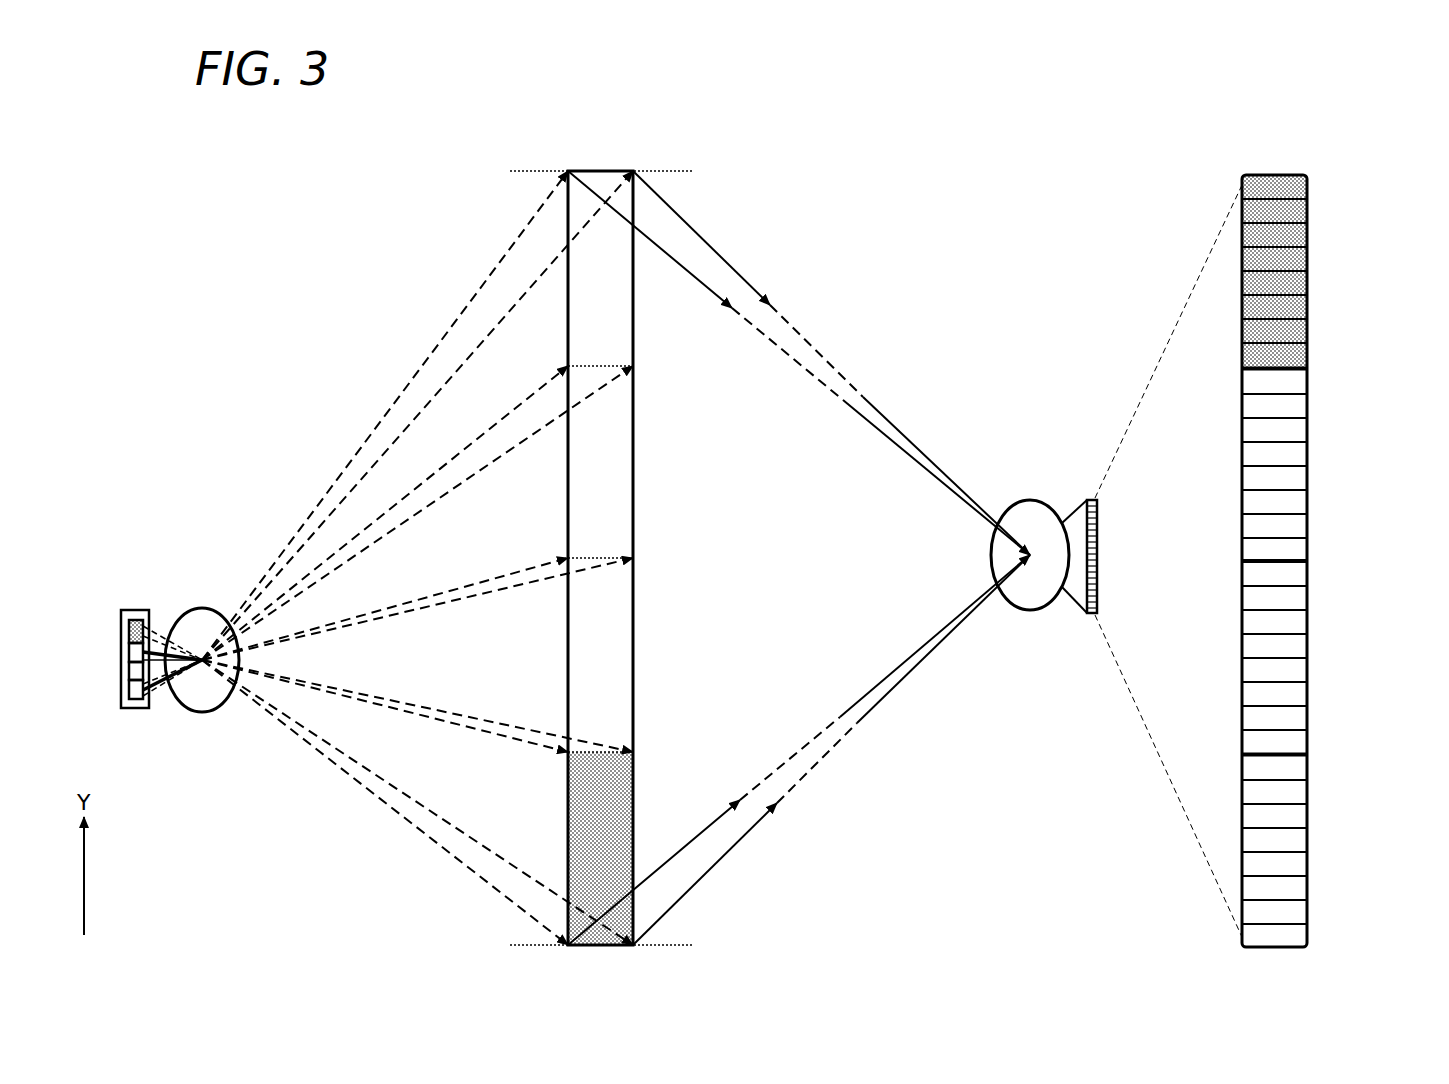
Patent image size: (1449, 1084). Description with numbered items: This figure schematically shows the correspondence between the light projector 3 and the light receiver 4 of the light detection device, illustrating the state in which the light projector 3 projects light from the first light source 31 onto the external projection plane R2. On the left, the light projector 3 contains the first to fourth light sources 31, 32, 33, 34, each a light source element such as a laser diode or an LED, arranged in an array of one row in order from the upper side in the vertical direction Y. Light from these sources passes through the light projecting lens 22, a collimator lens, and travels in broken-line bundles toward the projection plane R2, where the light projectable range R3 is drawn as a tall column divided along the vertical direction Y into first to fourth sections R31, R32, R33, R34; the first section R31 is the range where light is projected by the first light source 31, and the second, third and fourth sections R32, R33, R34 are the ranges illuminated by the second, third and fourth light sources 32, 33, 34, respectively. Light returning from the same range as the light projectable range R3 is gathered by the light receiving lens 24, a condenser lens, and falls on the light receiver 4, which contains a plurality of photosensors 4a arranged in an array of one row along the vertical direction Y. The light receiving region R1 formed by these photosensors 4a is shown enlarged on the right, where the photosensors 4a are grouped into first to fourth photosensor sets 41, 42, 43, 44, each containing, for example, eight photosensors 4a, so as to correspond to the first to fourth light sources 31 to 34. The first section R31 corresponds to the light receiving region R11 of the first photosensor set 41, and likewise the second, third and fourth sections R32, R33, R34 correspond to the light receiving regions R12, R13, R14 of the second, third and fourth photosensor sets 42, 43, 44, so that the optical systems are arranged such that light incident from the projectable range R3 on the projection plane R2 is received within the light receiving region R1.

The light projector 3 is at (120, 593).
The light projecting lens 22 is at (200, 607).
The light receiving lens 24 is at (1010, 505).
The light receiver 4 is at (1084, 495).
The photosensor 4a is at (1300, 183).
The first light source 31 is at (129, 628).
The second light source 32 is at (129, 648).
The third light source 33 is at (129, 668).
The fourth light source 34 is at (129, 690).
The first photosensor set 41 is at (1358, 175).
The second photosensor set 42 is at (1358, 371).
The third photosensor set 43 is at (1358, 564).
The fourth photosensor set 44 is at (1358, 757).
The light receiving region R1 is at (1280, 175).
The light receiving region of the first photosensor set R11 is at (1236, 268).
The light receiving region of the second photosensor set R12 is at (1236, 443).
The light receiving region of the third photosensor set R13 is at (1236, 640).
The light receiving region of the fourth photosensor set R14 is at (1236, 820).
The projection plane R2 is at (501, 229).
The light projectable range R3 is at (585, 170).
The first section R31 is at (627, 856).
The second section R32 is at (627, 676).
The third section R33 is at (627, 482).
The fourth section R34 is at (627, 289).